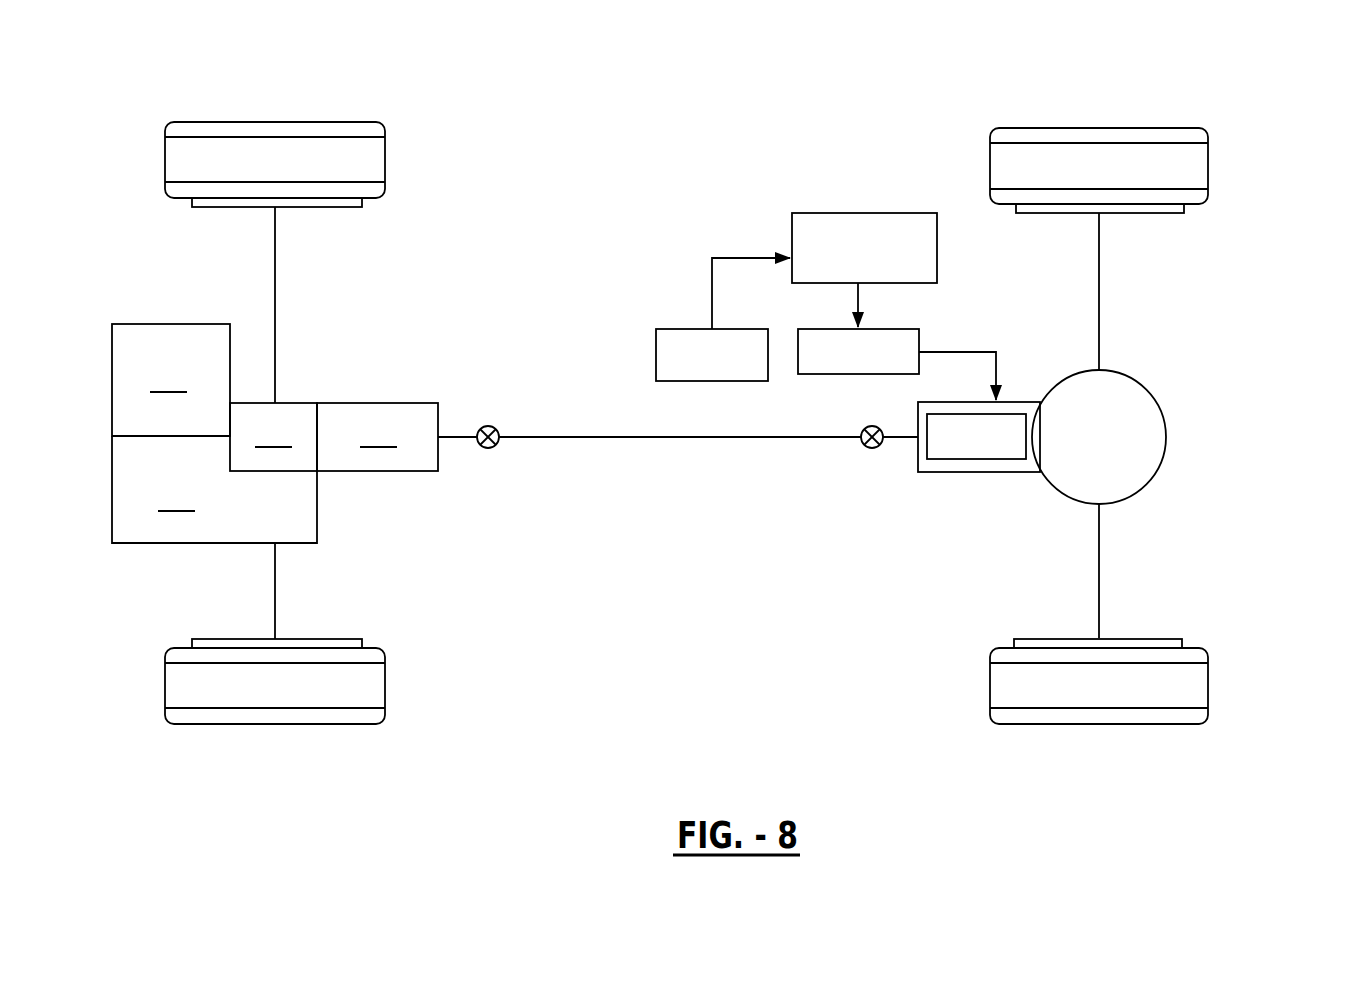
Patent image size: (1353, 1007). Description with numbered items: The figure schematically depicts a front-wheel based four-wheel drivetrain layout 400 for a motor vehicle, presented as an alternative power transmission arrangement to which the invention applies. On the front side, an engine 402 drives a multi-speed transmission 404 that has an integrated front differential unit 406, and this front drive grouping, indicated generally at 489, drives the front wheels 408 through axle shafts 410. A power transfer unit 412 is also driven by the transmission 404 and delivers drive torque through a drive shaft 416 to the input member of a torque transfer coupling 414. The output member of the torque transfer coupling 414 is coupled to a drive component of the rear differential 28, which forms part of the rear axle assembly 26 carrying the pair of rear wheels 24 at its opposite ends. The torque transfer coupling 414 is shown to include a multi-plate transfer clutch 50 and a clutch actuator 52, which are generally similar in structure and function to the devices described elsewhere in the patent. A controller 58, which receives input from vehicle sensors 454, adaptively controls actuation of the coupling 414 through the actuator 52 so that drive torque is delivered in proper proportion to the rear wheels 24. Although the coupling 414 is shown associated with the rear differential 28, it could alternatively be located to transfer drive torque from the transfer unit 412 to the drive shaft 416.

The drivetrain layout 400 is at (869, 106).
The front drive unit 489 is at (346, 343).
The engine 402 is at (171, 380).
The multi-speed transmission 404 is at (214, 489).
The integrated front differential unit 406 is at (273, 437).
The power transfer unit 412 is at (377, 437).
The axle shafts 410 is at (275, 268).
The front wheel 408 is at (372, 162).
The drive shaft 416 is at (645, 438).
The controller 58 is at (865, 213).
The vehicle sensors 454 is at (656, 352).
The clutch actuator 52 is at (908, 334).
The torque transfer coupling 414 is at (984, 433).
The multi-plate transfer clutch 50 is at (1015, 418).
The rear differential 28 is at (1145, 432).
The rear axle assembly 26 is at (1133, 425).
The rear wheels 24 is at (1196, 169).